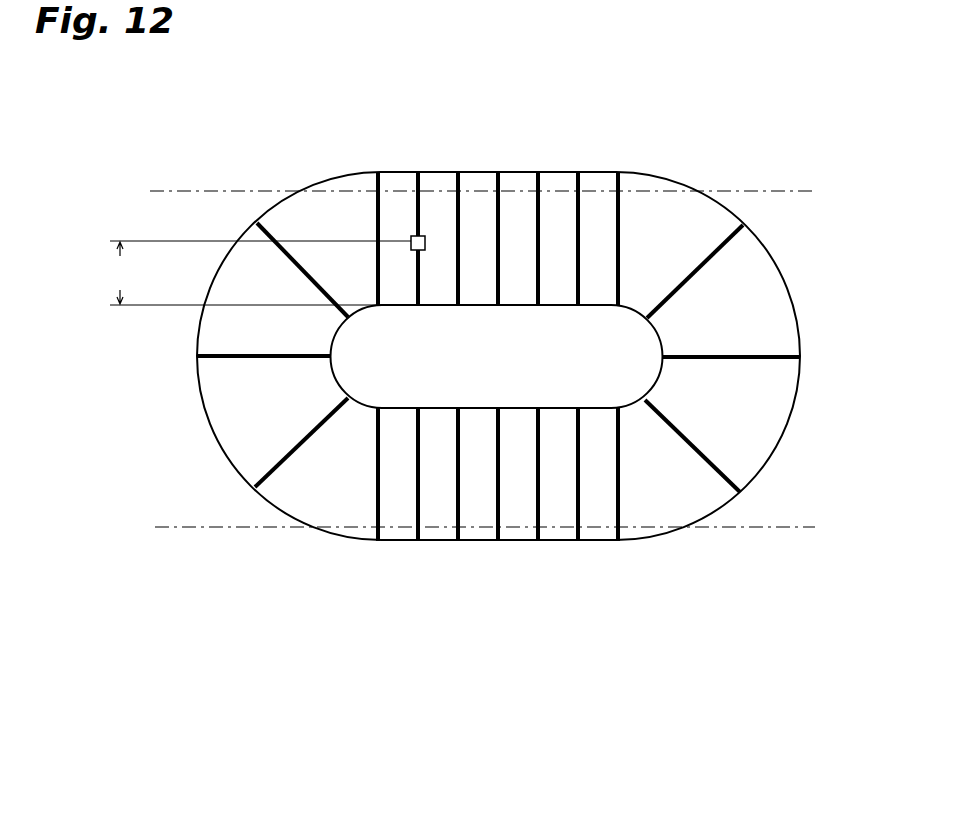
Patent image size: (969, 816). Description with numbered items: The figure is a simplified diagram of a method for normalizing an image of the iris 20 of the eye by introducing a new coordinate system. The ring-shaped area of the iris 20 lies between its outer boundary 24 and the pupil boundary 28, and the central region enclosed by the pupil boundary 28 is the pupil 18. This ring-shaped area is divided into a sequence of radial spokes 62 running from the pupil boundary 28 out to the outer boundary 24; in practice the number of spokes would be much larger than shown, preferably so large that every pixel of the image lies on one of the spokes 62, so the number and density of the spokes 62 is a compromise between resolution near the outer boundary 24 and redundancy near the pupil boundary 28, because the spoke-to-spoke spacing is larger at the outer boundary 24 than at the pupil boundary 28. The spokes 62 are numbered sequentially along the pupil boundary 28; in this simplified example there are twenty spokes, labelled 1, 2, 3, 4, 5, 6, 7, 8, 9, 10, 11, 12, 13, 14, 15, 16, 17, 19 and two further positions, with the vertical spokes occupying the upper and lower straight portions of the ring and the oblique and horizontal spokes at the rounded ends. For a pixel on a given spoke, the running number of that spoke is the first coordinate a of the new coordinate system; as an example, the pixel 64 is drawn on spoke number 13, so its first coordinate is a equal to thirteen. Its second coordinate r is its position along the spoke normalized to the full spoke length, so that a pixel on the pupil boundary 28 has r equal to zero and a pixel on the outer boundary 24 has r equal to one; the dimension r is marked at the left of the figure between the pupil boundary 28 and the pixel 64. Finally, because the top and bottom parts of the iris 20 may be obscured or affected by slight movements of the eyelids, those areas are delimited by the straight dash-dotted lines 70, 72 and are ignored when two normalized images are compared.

The straight line 70 is at (783, 192).
The straight line 72 is at (188, 531).
The iris 20 is at (500, 345).
The outer boundary 24 is at (783, 437).
The pupil boundary 28 is at (335, 378).
The central hub 18 is at (510, 377).
The radial spoke 62 is at (236, 458).
The pixel 64 is at (411, 240).
The cell position 1 is at (495, 496).
The cell position 2 is at (536, 496).
The cell position 3 is at (575, 496).
The cell position 4 is at (617, 496).
The cell position 5 is at (701, 463).
The cell position 6 is at (742, 361).
The cell position 7 is at (703, 260).
The cell position 8 is at (617, 223).
The cell position 9 is at (575, 223).
The cell position 10 is at (537, 223).
The cell position 11 is at (497, 223).
The cell position 12 is at (458, 223).
The cell position 13 is at (420, 223).
The cell position 14 is at (378, 223).
The cell position 15 is at (286, 256).
The cell position 16 is at (246, 358).
The cell position 17 is at (281, 458).
The cell position 19 is at (415, 496).